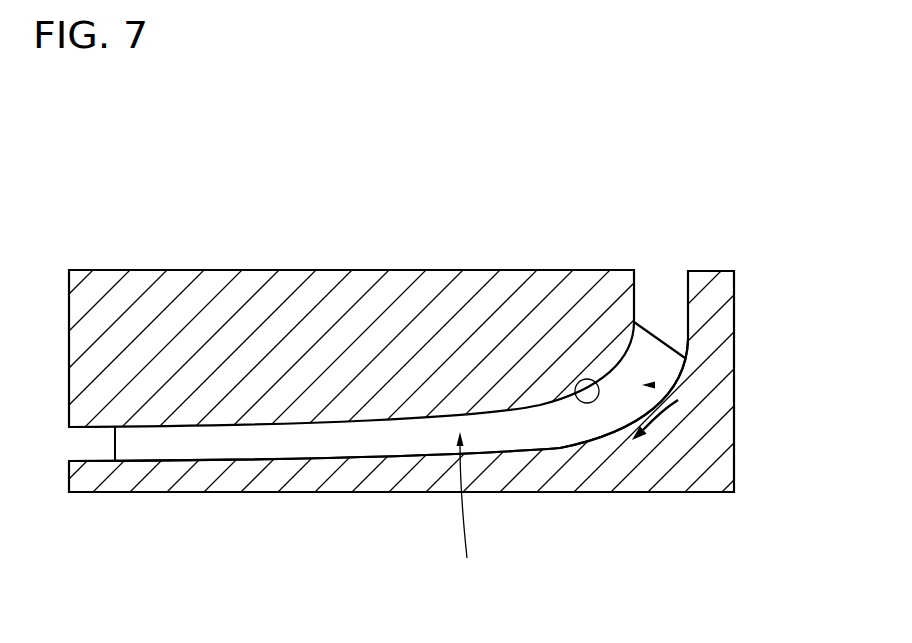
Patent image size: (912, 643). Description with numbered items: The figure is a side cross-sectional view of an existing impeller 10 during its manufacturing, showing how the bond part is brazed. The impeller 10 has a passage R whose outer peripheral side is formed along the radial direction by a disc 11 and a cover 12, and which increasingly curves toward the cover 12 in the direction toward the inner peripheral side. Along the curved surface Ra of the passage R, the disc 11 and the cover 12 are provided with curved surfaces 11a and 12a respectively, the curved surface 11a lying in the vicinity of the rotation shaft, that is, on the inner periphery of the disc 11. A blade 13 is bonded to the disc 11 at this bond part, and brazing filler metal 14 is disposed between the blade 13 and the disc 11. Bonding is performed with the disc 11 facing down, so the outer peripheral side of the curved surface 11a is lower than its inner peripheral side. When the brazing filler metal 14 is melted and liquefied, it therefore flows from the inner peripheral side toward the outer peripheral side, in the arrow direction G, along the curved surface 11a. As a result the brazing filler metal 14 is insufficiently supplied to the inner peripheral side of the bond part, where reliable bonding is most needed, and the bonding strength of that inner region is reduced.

The impeller 10 is at (456, 374).
The disc 11 is at (484, 435).
The curved surface 11a is at (640, 399).
The cover 12 is at (378, 291).
The curved surface 12a is at (578, 383).
The blade 13 is at (412, 438).
The brazing filler metal 14 is at (562, 448).
The passage R is at (474, 590).
The curved surface of the passage Ra is at (655, 385).
The arrow direction G is at (640, 399).